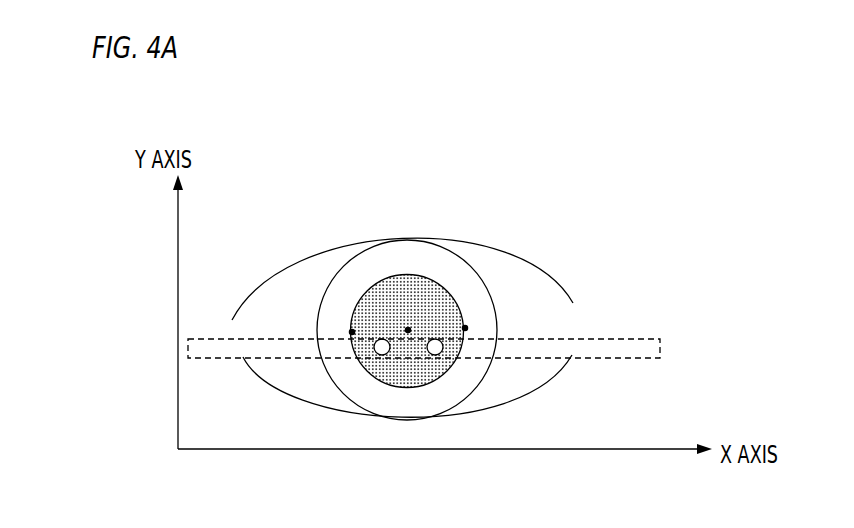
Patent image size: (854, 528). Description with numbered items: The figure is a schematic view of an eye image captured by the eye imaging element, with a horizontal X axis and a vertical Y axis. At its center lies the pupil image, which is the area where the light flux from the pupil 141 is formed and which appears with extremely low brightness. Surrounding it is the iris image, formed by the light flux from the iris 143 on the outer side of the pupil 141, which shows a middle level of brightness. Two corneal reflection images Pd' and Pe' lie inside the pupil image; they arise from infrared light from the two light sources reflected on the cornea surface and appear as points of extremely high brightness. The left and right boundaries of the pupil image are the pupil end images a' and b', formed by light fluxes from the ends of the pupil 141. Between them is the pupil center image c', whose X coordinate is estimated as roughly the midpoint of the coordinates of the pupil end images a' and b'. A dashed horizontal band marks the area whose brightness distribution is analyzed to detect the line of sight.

The pupil 141 is at (442, 300).
The iris 143 is at (463, 288).
The corneal reflection image Pd' is at (291, 223).
The corneal reflection image Pe' is at (390, 223).
The pupil end image a' is at (573, 301).
The pupil end image b' is at (289, 279).
The pupil center image c' is at (348, 222).